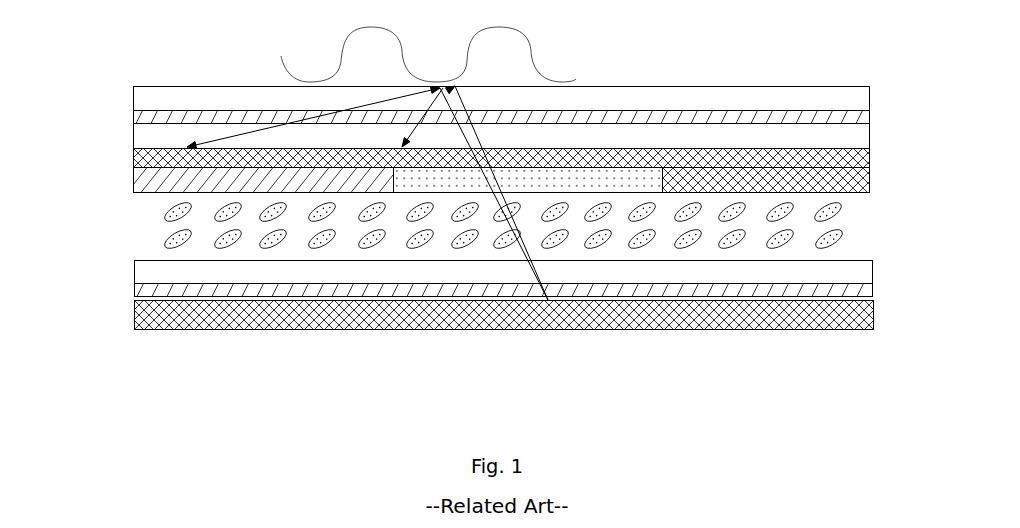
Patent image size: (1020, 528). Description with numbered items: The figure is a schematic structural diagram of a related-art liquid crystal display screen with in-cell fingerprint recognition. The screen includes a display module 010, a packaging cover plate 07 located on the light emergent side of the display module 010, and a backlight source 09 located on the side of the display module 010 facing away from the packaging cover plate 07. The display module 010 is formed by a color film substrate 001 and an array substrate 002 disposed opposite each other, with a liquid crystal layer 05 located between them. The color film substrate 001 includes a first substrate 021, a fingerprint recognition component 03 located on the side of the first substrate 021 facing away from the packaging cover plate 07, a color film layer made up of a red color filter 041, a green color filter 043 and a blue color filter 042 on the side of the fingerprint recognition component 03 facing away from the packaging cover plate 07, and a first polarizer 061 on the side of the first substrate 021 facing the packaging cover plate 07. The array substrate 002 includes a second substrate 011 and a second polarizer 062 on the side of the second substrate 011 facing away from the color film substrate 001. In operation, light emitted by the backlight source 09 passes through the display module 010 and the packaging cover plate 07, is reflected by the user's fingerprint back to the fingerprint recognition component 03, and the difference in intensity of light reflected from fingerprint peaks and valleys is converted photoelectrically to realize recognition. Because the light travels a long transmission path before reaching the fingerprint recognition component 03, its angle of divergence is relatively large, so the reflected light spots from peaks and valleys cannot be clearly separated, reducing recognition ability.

The display module 010 is at (882, 104).
The color film substrate 001 is at (120, 117).
The array substrate 002 is at (120, 263).
The packaging cover plate 07 is at (662, 98).
The first polarizer 061 is at (700, 122).
The first substrate 021 is at (734, 135).
The fingerprint recognition component 03 is at (776, 155).
The red color filter 041 is at (160, 180).
The green color filter 043 is at (618, 158).
The blue color filter 042 is at (822, 175).
The liquid crystal layer 05 is at (178, 245).
The second substrate 011 is at (348, 265).
The second polarizer 062 is at (396, 292).
The backlight source 09 is at (842, 315).